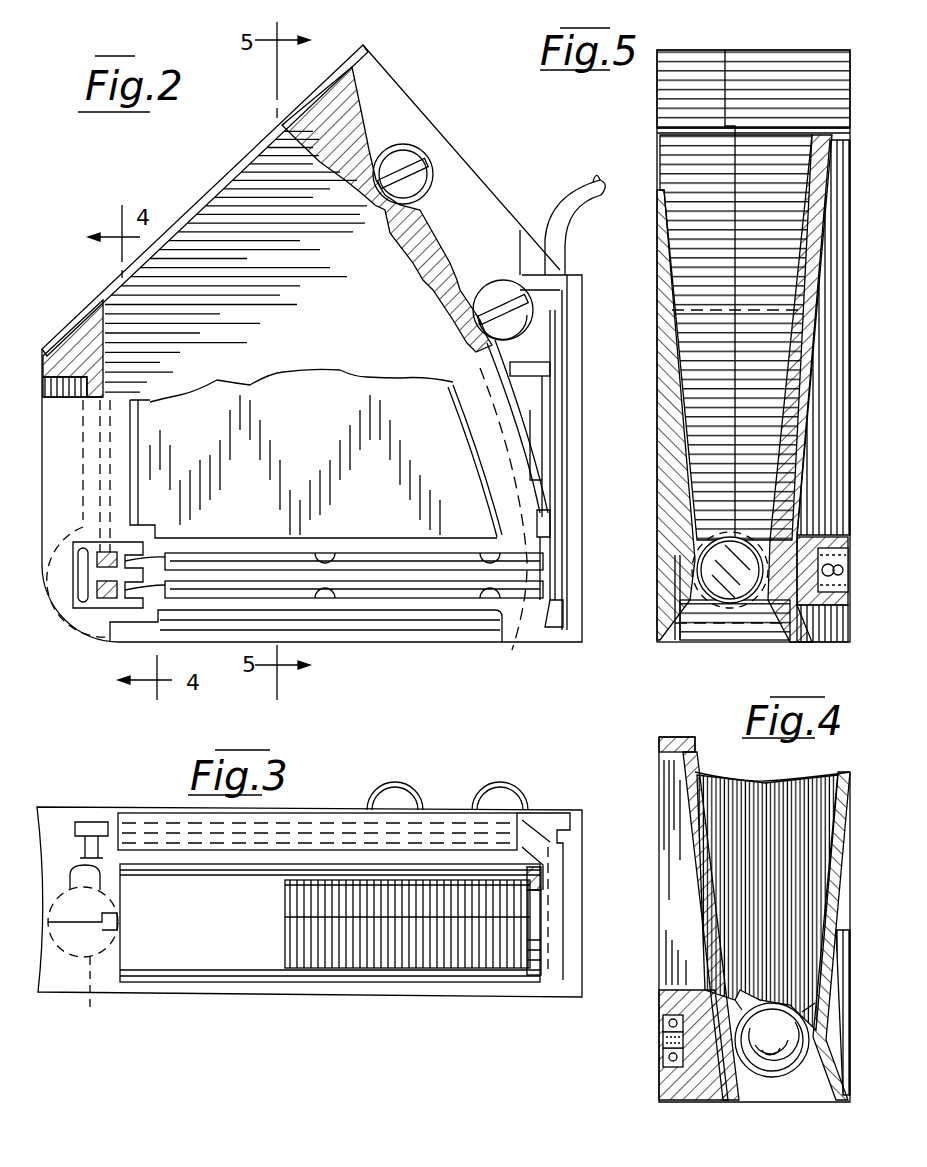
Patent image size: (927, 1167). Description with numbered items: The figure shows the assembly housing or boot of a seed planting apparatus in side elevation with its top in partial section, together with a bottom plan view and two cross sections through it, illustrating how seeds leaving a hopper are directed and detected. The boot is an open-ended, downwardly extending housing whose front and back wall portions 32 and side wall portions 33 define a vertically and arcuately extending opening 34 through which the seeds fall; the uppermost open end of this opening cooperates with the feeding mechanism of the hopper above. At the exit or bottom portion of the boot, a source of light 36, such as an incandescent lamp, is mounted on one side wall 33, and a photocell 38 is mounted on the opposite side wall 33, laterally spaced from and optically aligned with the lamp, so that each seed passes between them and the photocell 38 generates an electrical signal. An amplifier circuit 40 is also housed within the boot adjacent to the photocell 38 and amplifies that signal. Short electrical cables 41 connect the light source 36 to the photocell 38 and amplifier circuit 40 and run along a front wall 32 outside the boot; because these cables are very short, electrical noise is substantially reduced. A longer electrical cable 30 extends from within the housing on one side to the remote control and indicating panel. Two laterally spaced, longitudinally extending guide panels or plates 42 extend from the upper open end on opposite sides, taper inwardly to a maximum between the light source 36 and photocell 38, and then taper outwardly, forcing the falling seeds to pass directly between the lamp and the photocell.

In FIG. 2, the electrical cable 30 is at (578, 178).
In FIG. 2, the front and back wall portions 32 is at (284, 386).
In FIG. 2, the side wall portions 33 is at (576, 455).
In FIG. 2, the vertically and arcuately extending opening 34 is at (142, 296).
In FIG. 5, the vertically and arcuately extending opening 34 is at (785, 130).
In FIG. 4, the vertically and arcuately extending opening 34 is at (803, 775).
In FIG. 3, the vertically and arcuately extending opening 34 is at (243, 950).
In FIG. 2, the source of light 36 is at (57, 628).
In FIG. 4, the source of light 36 is at (786, 1075).
In FIG. 3, the source of light 36 is at (90, 1010).
In FIG. 2, the photocell 38 is at (514, 645).
In FIG. 5, the photocell 38 is at (696, 556).
In FIG. 3, the photocell 38 is at (545, 906).
In FIG. 2, the amplifier circuit 40 is at (520, 428).
In FIG. 2, the electrical cables 41 is at (370, 578).
In FIG. 5, the electrical cables 41 is at (830, 572).
In FIG. 4, the electrical cables 41 is at (663, 1057).
In FIG. 3, the electrical cables 41 is at (360, 815).
In FIG. 4, the guide panels or plates 42 is at (700, 818).